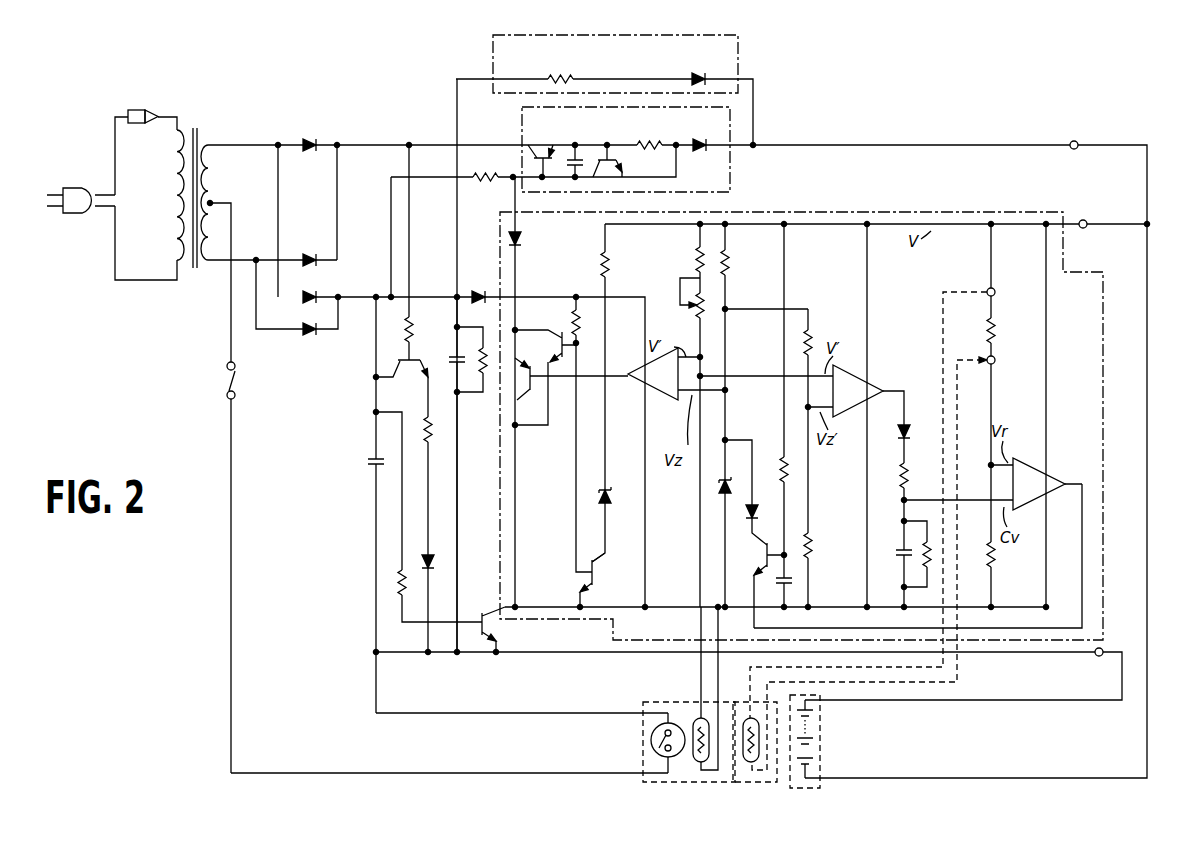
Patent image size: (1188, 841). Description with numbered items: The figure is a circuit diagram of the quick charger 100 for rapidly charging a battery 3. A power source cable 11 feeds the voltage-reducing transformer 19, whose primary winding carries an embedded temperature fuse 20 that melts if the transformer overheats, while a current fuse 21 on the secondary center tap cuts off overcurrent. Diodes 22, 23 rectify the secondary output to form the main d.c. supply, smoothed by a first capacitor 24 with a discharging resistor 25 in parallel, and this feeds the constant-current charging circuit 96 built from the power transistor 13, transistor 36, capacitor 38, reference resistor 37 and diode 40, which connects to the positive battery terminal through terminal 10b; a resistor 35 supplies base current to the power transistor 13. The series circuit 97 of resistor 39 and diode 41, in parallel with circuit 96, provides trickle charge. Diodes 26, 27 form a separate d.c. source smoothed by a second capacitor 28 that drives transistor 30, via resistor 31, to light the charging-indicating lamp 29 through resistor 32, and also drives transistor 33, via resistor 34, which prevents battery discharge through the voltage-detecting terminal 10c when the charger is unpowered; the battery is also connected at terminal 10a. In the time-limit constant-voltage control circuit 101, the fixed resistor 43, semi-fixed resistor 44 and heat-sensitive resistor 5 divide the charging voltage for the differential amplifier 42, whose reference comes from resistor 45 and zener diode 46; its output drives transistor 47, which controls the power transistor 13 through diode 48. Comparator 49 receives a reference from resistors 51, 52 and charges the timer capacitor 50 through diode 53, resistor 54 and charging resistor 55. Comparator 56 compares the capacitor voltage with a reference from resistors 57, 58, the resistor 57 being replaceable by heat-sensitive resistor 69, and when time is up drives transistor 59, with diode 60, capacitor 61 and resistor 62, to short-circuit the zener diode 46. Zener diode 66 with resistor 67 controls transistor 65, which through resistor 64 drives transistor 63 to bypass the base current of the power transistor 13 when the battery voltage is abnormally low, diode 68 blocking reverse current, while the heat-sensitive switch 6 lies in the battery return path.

The power source cable 11 is at (84, 188).
The temperature fuse 20 is at (139, 110).
The voltage-reducing transformer 19 is at (202, 136).
The current fuse 21 is at (226, 385).
The diode 22 is at (307, 140).
The diode 23 is at (307, 256).
The diode 26 is at (315, 295).
The diode 27 is at (310, 336).
The resistor 35 is at (492, 176).
The diode 48 is at (509, 238).
The diode 68 is at (476, 293).
The trickle charge series circuit 97 is at (752, 45).
The resistor 39 is at (560, 78).
The diode 41 is at (701, 78).
The constant-current charging circuit 96 is at (733, 185).
The power transistor 13 is at (541, 153).
The capacitor 38 is at (580, 156).
The transistor 36 is at (624, 171).
The reference resistor 37 is at (647, 144).
The diode 40 is at (700, 144).
The quick charger 100 is at (866, 137).
The terminal 10b is at (1074, 141).
The voltage-detecting terminal 10c is at (1083, 220).
The terminal 10a is at (1098, 658).
The time-limit constant-voltage control circuit 101 is at (1104, 310).
The resistor 31 is at (405, 339).
The transistor 30 is at (403, 374).
The resistor 32 is at (430, 445).
The charging-indicating lamp 29 is at (451, 548).
The second capacitor 28 is at (365, 465).
The resistor 34 is at (392, 588).
The transistor 33 is at (498, 631).
The first capacitor 24 is at (450, 352).
The discharging resistor 25 is at (484, 385).
The resistor 67 is at (601, 254).
The zener diode 66 is at (610, 506).
The resistor 64 is at (574, 299).
The transistor 63 is at (560, 337).
The transistor 47 is at (529, 404).
The differential amplifier 42 is at (669, 403).
The fixed resistor 43 is at (695, 259).
The semi-fixed resistor 44 is at (696, 304).
The resistor 45 is at (731, 267).
The zener diode 46 is at (718, 488).
The resistor 51 is at (814, 343).
The resistor 52 is at (814, 558).
The comparator 49 is at (874, 386).
The diode 53 is at (906, 431).
The resistor 54 is at (903, 481).
The timer capacitor 50 is at (892, 557).
The charging resistor 55 is at (935, 555).
The resistor 62 is at (782, 464).
The capacitor 61 is at (796, 584).
The diode 60 is at (746, 517).
The transistor 59 is at (762, 568).
The transistor 65 is at (582, 574).
The resistor 57 is at (996, 333).
The resistor 58 is at (994, 559).
The comparator 56 is at (1040, 463).
The heat-sensitive switch 6 is at (649, 745).
The heat-sensitive resistor 5 is at (698, 768).
The heat-sensitive resistor 69 is at (753, 768).
The battery 3 is at (822, 766).